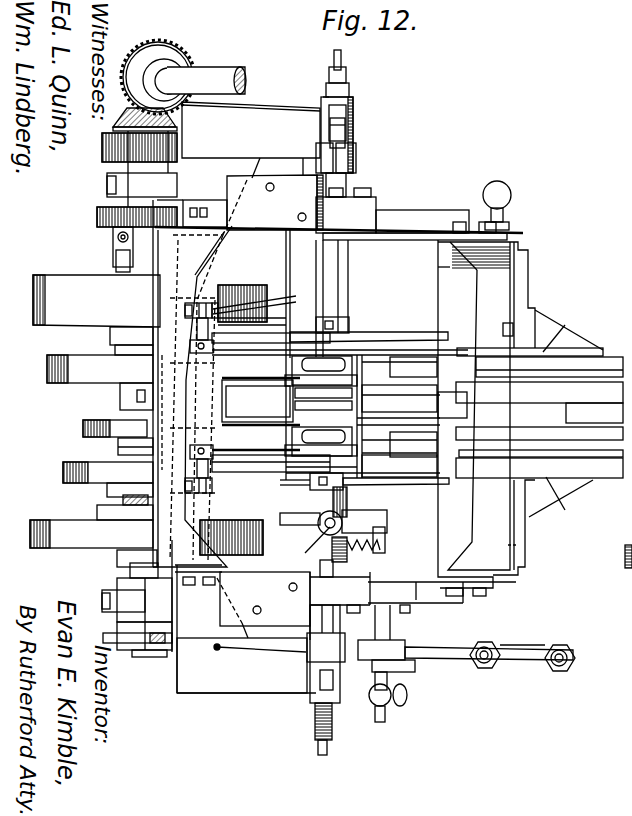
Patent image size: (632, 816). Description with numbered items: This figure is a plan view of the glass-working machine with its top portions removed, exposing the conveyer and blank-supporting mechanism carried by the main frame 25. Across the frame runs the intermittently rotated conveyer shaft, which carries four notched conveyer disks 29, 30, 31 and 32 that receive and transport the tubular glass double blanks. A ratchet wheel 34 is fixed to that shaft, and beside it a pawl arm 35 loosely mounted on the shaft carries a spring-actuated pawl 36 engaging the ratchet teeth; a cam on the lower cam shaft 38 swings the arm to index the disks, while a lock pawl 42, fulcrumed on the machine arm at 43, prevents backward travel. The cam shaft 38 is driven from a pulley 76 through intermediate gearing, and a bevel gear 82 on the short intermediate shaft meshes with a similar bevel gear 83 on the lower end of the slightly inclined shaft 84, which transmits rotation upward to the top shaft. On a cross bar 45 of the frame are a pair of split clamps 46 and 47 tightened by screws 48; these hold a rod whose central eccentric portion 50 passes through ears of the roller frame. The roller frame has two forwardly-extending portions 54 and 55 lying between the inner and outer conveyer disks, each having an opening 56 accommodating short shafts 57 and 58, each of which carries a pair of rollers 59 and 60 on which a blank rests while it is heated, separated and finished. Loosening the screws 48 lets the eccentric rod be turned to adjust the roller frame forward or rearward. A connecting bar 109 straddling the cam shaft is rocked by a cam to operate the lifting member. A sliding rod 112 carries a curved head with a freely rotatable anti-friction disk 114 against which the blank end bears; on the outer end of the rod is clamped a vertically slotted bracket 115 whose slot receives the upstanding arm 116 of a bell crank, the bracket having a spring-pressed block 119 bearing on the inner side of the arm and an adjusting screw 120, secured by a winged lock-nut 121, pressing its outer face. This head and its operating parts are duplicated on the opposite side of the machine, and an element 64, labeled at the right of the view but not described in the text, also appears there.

The bevel gear 83 is at (166, 40).
The slightly inclined shaft 84 is at (218, 70).
The bevel gear 82 is at (122, 114).
The winged lock-nut 121 is at (326, 84).
The adjusting screw 120 is at (346, 72).
The vertically slotted bracket 115 is at (353, 112).
The upstanding arm 116 is at (340, 128).
The main frame 25 is at (410, 212).
The pulley 76 is at (58, 278).
The spring-pressed block 119 is at (205, 303).
The split clamp 46 is at (225, 300).
The screws 48 is at (264, 299).
The sliding shaft or rod 112 is at (346, 282).
The anti-friction disk 114 is at (346, 316).
The conveyer disk 29 is at (390, 366).
The bracket 64 is at (566, 419).
The central eccentric portion 50 is at (214, 347).
The forwardly-extending portion 54 is at (259, 368).
The short shaft 57 is at (292, 366).
The roller 59 is at (399, 406).
The opening 56 is at (287, 401).
The roller 60 is at (401, 418).
The short shaft 58 is at (399, 400).
The conveyer disk 31 is at (412, 420).
The conveyer disk 30 is at (530, 413).
The forwardly-extending portion 55 is at (256, 437).
The conveyer disk 32 is at (363, 466).
The cross bar 45 is at (152, 473).
The split clamp 47 is at (214, 492).
The connecting bar 109 is at (121, 499).
The spring-actuated pawl 36 is at (383, 520).
The ratchet wheel 34 is at (385, 540).
The pawl arm 35 is at (372, 552).
The lock pawl 42 is at (272, 589).
The lower cam shaft 38 is at (117, 568).
The fulcrum 43 is at (246, 645).